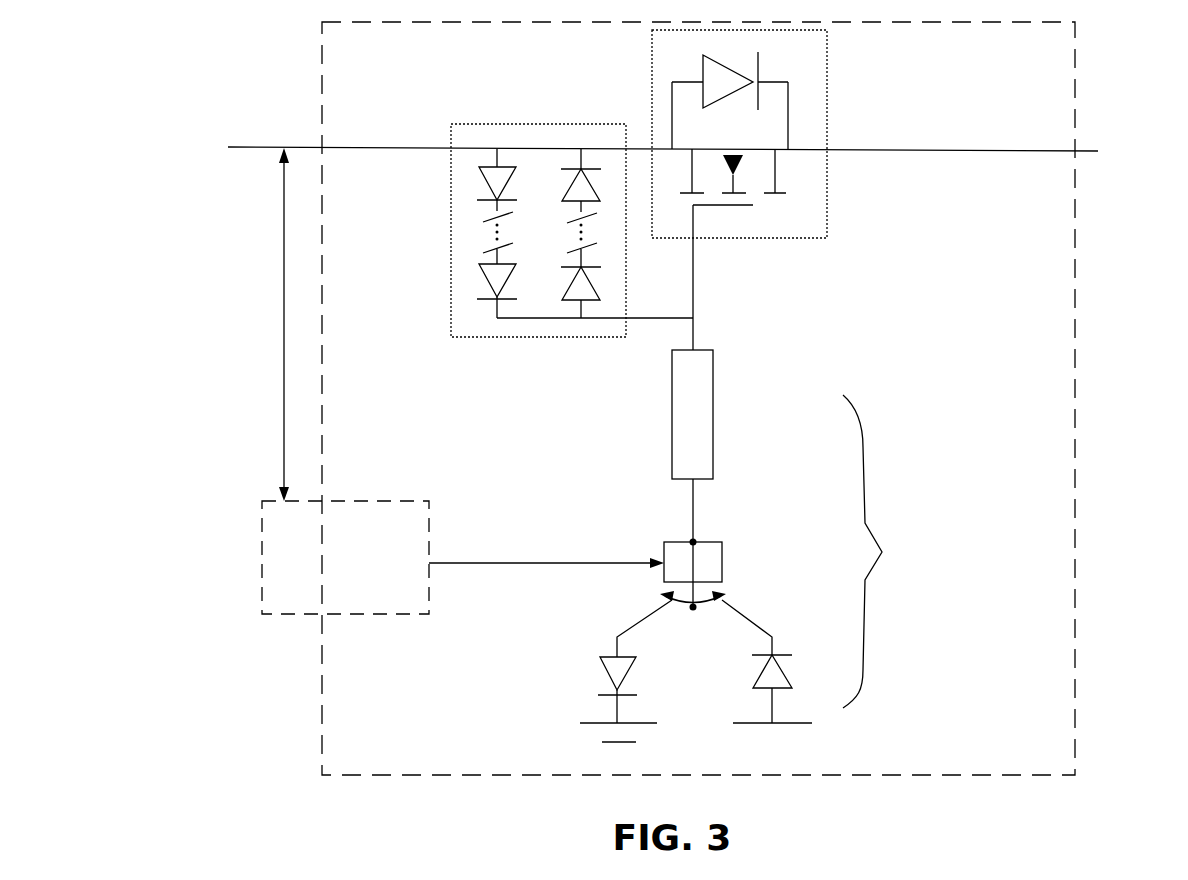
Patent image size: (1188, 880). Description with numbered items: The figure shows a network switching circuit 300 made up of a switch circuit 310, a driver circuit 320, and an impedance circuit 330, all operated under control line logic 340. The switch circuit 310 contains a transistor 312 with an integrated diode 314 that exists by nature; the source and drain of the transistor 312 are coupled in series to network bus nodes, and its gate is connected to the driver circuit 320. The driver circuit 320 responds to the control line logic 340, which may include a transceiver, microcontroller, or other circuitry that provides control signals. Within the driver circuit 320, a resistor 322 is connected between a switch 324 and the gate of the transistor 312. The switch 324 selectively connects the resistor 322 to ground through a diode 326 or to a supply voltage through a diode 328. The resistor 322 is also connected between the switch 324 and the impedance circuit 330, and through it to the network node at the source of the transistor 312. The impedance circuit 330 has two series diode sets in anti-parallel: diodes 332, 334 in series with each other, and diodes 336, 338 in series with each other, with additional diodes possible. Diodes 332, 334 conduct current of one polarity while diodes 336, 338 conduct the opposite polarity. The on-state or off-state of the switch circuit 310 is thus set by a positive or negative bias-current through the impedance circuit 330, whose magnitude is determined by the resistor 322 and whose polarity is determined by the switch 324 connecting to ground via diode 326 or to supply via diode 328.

The network switching circuit 300 is at (1110, 41).
The switch circuit 310 is at (755, 148).
The transistor 312 is at (754, 205).
The integrated diode 314 is at (712, 57).
The driver circuit 320 is at (755, 539).
The resistor 322 is at (706, 348).
The switch 324 is at (713, 544).
The diode 326 is at (627, 657).
The diode 328 is at (780, 655).
The impedance circuit 330 is at (513, 220).
The diode 332 is at (484, 181).
The diode 334 is at (484, 279).
The diode 336 is at (572, 188).
The diode 338 is at (574, 283).
The control line logic 340 is at (402, 501).